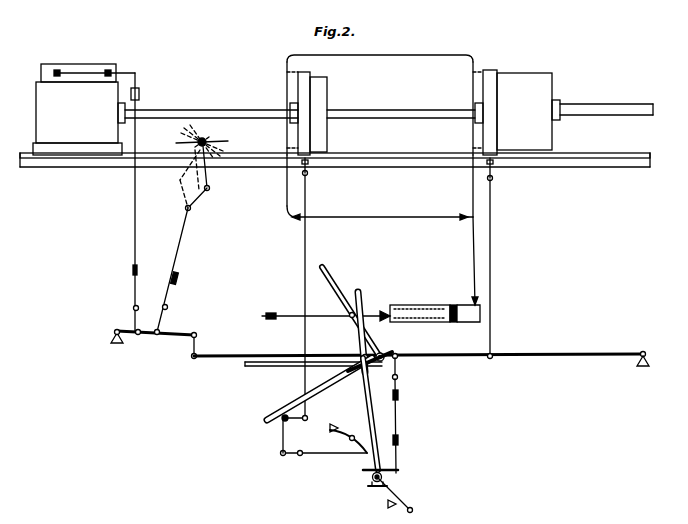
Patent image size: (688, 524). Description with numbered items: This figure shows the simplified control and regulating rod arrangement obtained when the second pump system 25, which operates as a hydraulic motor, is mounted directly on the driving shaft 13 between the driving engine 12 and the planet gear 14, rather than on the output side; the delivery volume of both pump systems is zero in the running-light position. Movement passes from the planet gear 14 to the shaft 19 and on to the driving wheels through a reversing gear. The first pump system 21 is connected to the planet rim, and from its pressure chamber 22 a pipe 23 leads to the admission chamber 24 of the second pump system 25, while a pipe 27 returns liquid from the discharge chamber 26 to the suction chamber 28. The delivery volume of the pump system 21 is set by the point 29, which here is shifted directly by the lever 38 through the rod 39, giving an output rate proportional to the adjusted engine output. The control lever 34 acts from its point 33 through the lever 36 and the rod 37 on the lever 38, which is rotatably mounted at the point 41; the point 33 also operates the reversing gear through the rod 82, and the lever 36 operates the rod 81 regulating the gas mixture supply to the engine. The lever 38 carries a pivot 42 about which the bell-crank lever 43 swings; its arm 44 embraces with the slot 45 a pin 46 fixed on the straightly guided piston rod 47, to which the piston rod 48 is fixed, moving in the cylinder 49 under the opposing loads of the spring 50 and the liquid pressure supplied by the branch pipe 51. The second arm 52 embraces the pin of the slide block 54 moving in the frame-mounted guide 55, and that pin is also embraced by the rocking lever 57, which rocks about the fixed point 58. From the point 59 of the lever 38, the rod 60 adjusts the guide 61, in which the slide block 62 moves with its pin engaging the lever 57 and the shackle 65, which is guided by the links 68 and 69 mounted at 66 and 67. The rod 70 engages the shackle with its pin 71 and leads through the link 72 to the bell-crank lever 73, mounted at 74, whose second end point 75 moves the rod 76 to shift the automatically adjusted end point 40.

The driving engine 12 is at (84, 109).
The shaft 13 is at (192, 110).
The planet gear 14 is at (538, 76).
The shaft 19 is at (594, 108).
The pump system 21 is at (490, 73).
The pressure chamber 22 is at (473, 131).
The pipe 23 is at (420, 218).
The admission chamber 24 is at (290, 132).
The second pump system 25 is at (320, 102).
The discharge chamber 26 is at (290, 87).
The pipe 27 is at (424, 55).
The suction chamber 28 is at (473, 85).
The point 29 is at (493, 179).
The point 33 is at (194, 239).
The control lever 34 is at (202, 140).
The lever 36 is at (163, 336).
The rod 37 is at (197, 345).
The lever 38 is at (575, 356).
The rod 39 is at (491, 293).
The second end point 40 is at (316, 173).
The point 41 is at (650, 359).
The pivot 42 is at (383, 354).
The bell-crank lever 43 is at (362, 296).
The arm 44 is at (367, 354).
The slot 45 is at (333, 280).
The pin 46 is at (350, 318).
The piston rod 47 is at (262, 317).
The piston rod 48 is at (450, 325).
The cylinder 49 is at (470, 325).
The spring 50 is at (420, 325).
The branch pipe 51 is at (474, 268).
The second arm 52 is at (302, 400).
The slide block 54 is at (368, 371).
The guide 55 is at (268, 367).
The rocking lever 57 is at (372, 410).
The fixed point 58 is at (376, 487).
The point 59 is at (398, 366).
The rod 60 is at (399, 412).
The guide 61 is at (366, 480).
The slide block 62 is at (370, 484).
The shackle 65 is at (396, 497).
The mounting point 66 is at (334, 434).
The mounting point 67 is at (389, 512).
The link 68 is at (344, 427).
The link 69 is at (412, 516).
The rod 70 is at (325, 456).
The pin 71 is at (360, 460).
The link 72 is at (296, 456).
The bell-crank lever 73 is at (285, 440).
The mounting point 74 is at (284, 422).
The second end point 75 is at (307, 416).
The rod 76 is at (294, 296).
The rod 81 is at (133, 228).
The rod 82 is at (335, 168).